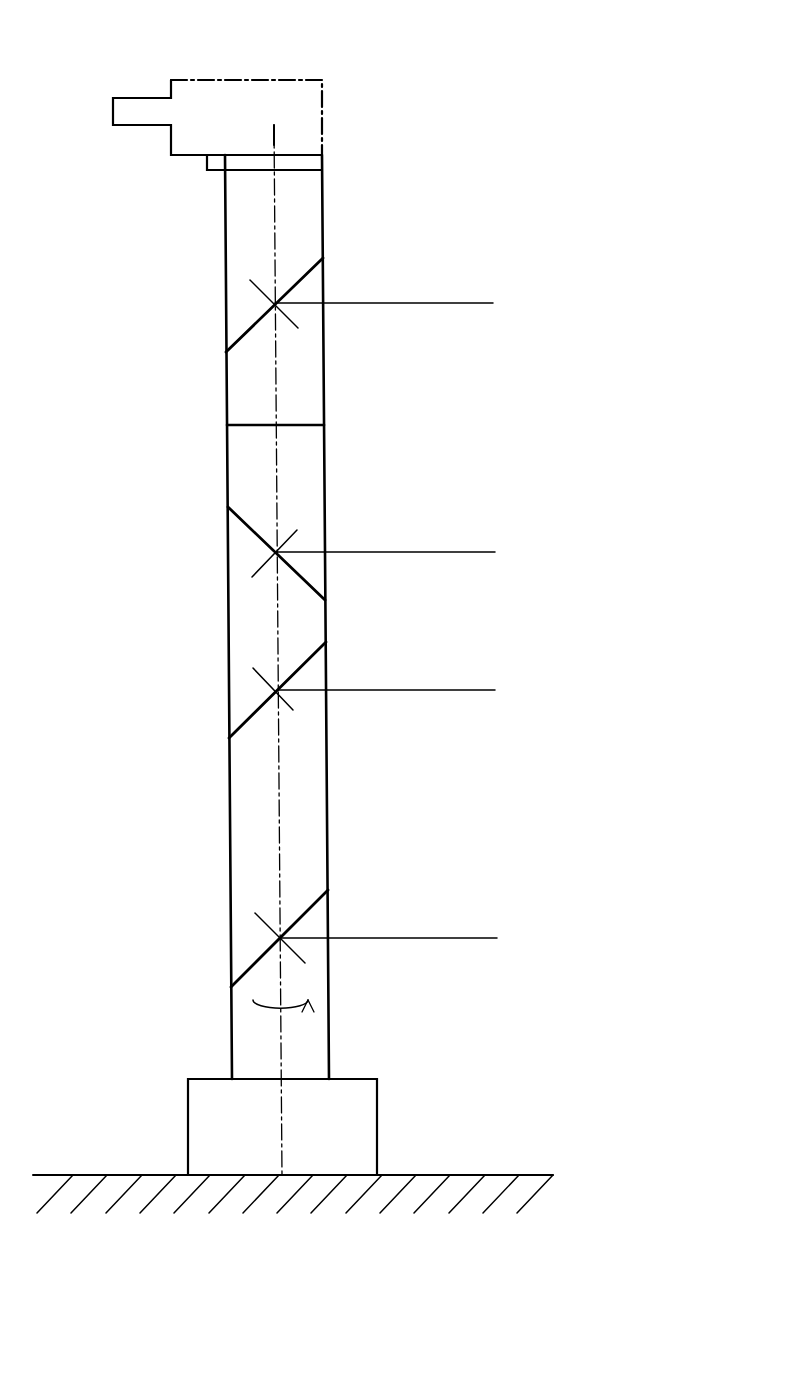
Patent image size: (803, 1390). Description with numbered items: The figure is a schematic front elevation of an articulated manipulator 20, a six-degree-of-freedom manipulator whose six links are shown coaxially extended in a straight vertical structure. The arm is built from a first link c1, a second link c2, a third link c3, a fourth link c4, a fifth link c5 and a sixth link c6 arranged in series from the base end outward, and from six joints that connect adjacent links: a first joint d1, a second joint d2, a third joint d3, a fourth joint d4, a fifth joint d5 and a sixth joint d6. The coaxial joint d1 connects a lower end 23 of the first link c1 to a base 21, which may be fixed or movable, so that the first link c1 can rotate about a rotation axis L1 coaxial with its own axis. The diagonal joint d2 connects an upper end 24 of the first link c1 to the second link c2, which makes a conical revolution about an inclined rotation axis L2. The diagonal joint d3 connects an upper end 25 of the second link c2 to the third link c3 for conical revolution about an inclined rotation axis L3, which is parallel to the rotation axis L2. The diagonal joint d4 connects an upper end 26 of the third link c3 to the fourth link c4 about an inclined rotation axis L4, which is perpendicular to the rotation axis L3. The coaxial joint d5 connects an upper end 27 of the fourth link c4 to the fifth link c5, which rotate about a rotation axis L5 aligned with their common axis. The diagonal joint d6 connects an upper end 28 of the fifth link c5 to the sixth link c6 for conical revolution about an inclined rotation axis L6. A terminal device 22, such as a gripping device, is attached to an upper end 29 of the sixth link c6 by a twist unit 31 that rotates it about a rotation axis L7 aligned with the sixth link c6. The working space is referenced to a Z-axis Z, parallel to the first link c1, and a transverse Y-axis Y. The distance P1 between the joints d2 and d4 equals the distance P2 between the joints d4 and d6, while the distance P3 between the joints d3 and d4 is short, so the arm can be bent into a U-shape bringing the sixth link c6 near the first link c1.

The articulated manipulator 20 is at (465, 253).
The base 21 is at (368, 1133).
The terminal device 22 is at (287, 88).
The lower end of the first link 23 is at (265, 1068).
The upper end of the first link 24 is at (315, 922).
The upper end of the second link 25 is at (313, 672).
The upper end of the third link 26 is at (293, 583).
The upper end of the fourth link 27 is at (290, 432).
The upper end of the fifth link 28 is at (315, 283).
The upper end of the sixth link 29 is at (248, 188).
The twist unit 31 is at (317, 162).
The first link c1 is at (315, 1008).
The second link c2 is at (315, 825).
The third link c3 is at (320, 623).
The fourth link c4 is at (318, 493).
The fifth link c5 is at (315, 365).
The sixth link c6 is at (315, 228).
The first joint d1 is at (248, 1050).
The second joint d2 is at (253, 950).
The third joint d3 is at (252, 698).
The fourth joint d4 is at (252, 542).
The fifth joint d5 is at (258, 412).
The sixth joint d6 is at (252, 312).
The rotation axis L1 is at (283, 1067).
The inclined rotation axis L2 is at (302, 955).
The inclined rotation axis L3 is at (297, 710).
The inclined rotation axis L4 is at (293, 537).
The rotation axis L5 is at (276, 403).
The inclined rotation axis L6 is at (293, 322).
The rotation axis L7 is at (274, 193).
The distance P1 is at (477, 690).
The distance P2 is at (477, 303).
The distance P3 is at (477, 552).
The Z-axis Z is at (609, 757).
The Y-axis Y is at (665, 973).